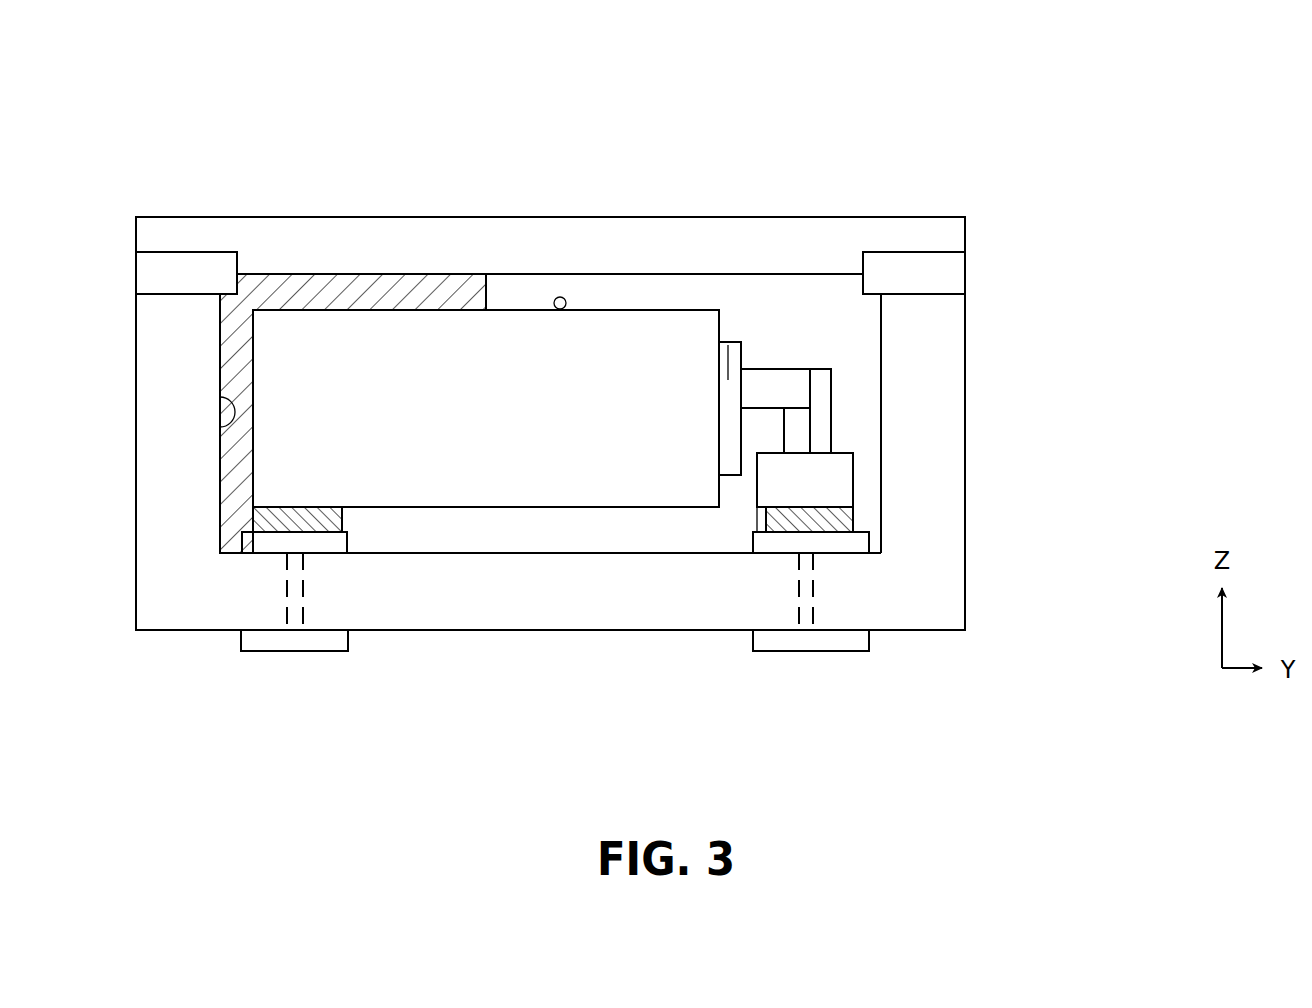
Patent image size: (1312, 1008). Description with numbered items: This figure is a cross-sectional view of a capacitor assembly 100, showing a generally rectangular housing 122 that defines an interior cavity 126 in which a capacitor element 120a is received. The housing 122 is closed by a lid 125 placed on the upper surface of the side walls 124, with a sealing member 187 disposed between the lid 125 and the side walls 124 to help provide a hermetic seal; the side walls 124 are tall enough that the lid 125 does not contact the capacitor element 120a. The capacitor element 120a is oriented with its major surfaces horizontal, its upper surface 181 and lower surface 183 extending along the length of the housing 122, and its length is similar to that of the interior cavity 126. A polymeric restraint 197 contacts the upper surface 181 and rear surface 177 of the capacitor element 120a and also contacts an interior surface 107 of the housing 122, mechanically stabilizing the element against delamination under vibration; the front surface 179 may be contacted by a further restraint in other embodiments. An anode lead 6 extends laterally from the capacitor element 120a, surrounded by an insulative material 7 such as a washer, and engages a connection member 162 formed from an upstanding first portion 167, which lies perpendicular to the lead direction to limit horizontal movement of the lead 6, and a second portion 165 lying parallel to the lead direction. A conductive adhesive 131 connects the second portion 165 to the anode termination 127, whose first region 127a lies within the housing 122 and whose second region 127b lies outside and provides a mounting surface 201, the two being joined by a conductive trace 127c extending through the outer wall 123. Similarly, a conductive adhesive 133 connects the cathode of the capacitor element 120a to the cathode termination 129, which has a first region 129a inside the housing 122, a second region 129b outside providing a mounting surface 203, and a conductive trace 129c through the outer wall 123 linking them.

The capacitor assembly 100 is at (975, 143).
The housing 122 is at (106, 432).
The outer wall 123 is at (532, 608).
The side wall 124 is at (147, 373).
The lid 125 is at (582, 248).
The interior cavity 126 is at (731, 299).
The sealing member 187 is at (160, 282).
The polymeric restraint 197 is at (410, 290).
The interior surface 107 is at (222, 432).
The capacitor element 120a is at (486, 408).
The rear surface 177 is at (255, 408).
The lower surface 183 is at (522, 510).
The upper surface 181 is at (560, 309).
The front surface 179 is at (718, 328).
The insulative material 7 is at (729, 362).
The anode lead 6 is at (775, 411).
The first portion 167 is at (817, 428).
The second portion 165 is at (805, 480).
The conductive adhesive 131 is at (836, 519).
The conductive adhesive 133 is at (322, 520).
The connection member 162 is at (742, 522).
The cathode termination 129 is at (347, 664).
The first region 129a is at (327, 540).
The second region 129b is at (263, 641).
The conductive trace 129c is at (295, 590).
The mounting surface 203 is at (302, 655).
The anode termination 127 is at (893, 645).
The first region 127a is at (845, 543).
The second region 127b is at (783, 641).
The conductive trace 127c is at (805, 590).
The mounting surface 201 is at (832, 653).